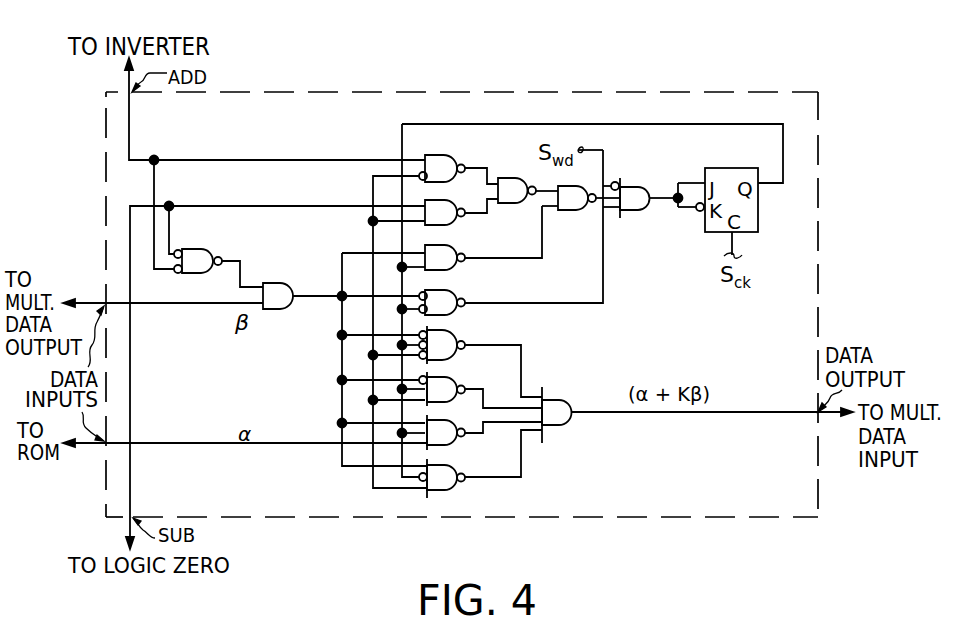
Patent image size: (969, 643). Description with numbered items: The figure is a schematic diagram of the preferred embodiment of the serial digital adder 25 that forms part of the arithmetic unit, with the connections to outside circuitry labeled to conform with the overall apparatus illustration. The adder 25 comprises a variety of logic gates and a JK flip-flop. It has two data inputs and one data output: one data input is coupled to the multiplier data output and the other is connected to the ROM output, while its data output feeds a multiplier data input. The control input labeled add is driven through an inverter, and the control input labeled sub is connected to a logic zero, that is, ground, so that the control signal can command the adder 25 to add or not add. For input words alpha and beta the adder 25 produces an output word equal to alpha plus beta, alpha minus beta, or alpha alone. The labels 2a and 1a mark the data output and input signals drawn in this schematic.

The serial digital adder 25 is at (757, 92).
The data output signal i2a to multiplier 2a is at (163, 289).
The data input signal i1a to ROM 1a is at (245, 460).